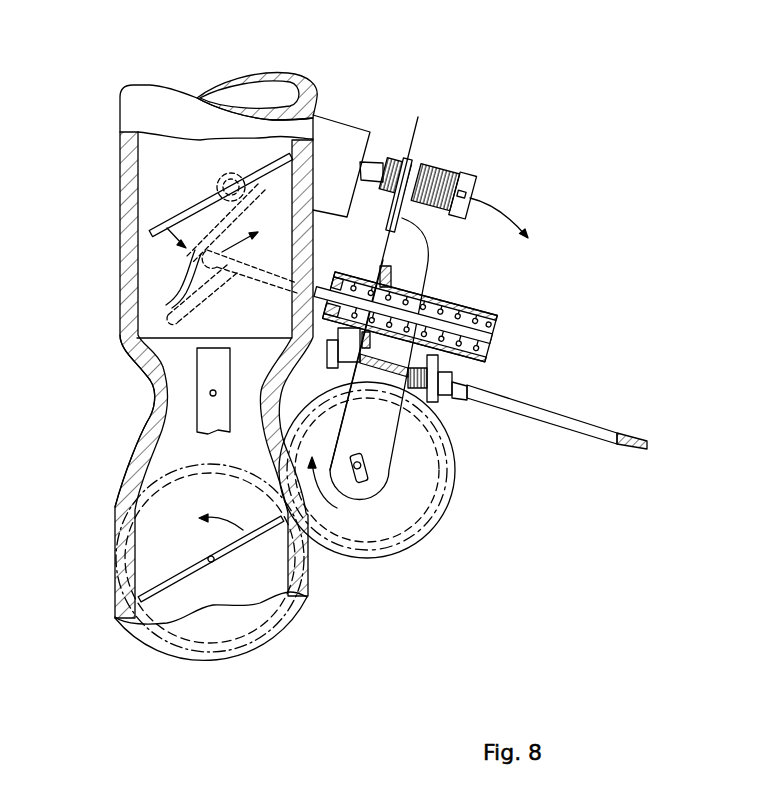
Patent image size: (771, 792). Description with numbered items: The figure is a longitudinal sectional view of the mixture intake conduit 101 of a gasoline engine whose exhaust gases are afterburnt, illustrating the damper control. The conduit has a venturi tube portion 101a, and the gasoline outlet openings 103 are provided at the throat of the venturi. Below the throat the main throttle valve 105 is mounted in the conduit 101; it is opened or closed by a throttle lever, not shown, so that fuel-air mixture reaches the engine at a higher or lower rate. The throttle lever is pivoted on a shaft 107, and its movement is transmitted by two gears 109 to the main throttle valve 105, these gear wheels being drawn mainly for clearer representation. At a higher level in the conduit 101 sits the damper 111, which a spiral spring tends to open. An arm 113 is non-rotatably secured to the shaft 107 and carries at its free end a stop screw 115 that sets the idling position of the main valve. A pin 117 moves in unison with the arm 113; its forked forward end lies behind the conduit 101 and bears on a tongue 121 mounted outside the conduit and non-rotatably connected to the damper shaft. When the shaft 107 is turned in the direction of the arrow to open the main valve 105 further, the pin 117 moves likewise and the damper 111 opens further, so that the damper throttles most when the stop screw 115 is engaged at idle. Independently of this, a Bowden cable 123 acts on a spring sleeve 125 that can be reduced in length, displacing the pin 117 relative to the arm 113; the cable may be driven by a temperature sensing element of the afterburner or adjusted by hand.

The mixture intake conduit 101 is at (128, 180).
The venturi tube portion 101a is at (150, 378).
The gasoline outlet openings 103 is at (213, 393).
The main throttle valve 105 is at (162, 590).
The shaft 107 is at (364, 478).
The gears 109 is at (270, 608).
The damper 111 is at (183, 213).
The arm 113 is at (406, 252).
The stop screw 115 is at (426, 116).
The pin 117 is at (265, 276).
The tongue 121 is at (180, 278).
The Bowden cable 123 is at (637, 433).
The spring sleeve 125 is at (450, 307).